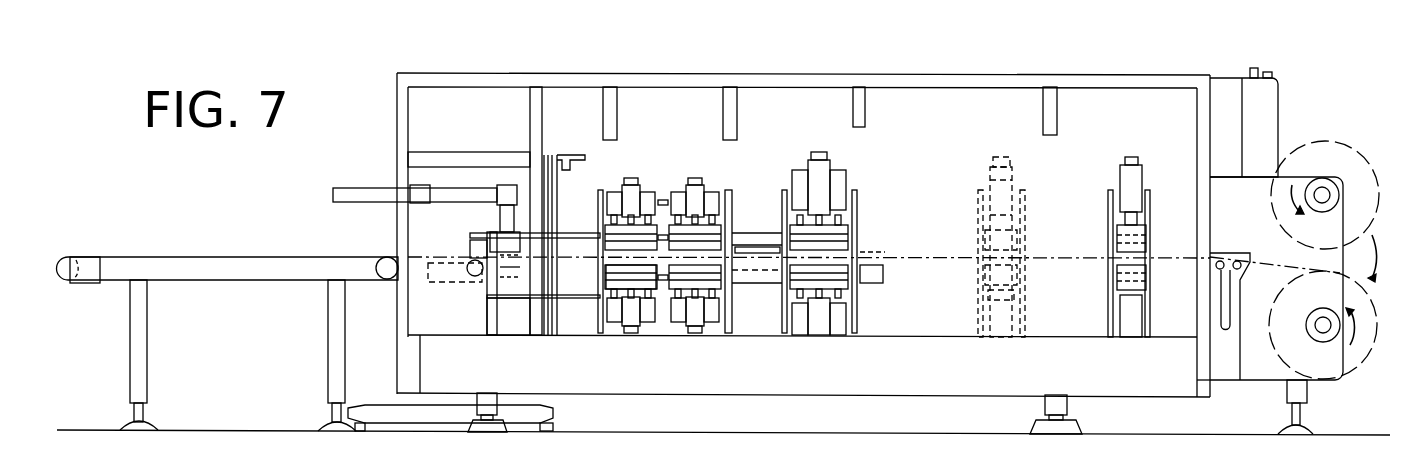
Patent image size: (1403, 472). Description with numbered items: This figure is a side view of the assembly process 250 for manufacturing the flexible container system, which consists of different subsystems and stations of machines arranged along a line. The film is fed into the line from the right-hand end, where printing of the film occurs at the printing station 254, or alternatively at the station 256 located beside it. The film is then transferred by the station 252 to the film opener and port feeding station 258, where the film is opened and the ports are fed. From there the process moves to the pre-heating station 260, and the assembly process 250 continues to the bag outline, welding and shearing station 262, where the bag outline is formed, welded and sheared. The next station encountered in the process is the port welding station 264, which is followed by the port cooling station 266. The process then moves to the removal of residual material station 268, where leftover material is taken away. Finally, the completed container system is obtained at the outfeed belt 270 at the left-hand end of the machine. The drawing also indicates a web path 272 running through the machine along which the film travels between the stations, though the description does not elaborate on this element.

The assembly process 250 is at (232, 188).
The station 252 is at (890, 285).
The printing station 254 is at (1118, 175).
The station 256 is at (985, 178).
The film opener and port feeding station 258 is at (878, 257).
The pre-heating station 260 is at (897, 333).
The bag outline, welding and shearing station 262 is at (815, 262).
The port welding station 264 is at (695, 268).
The port cooling station 266 is at (628, 265).
The removal of residual material station 268 is at (580, 230).
The outfeed belt 270 is at (236, 255).
The web strip 272 is at (868, 256).